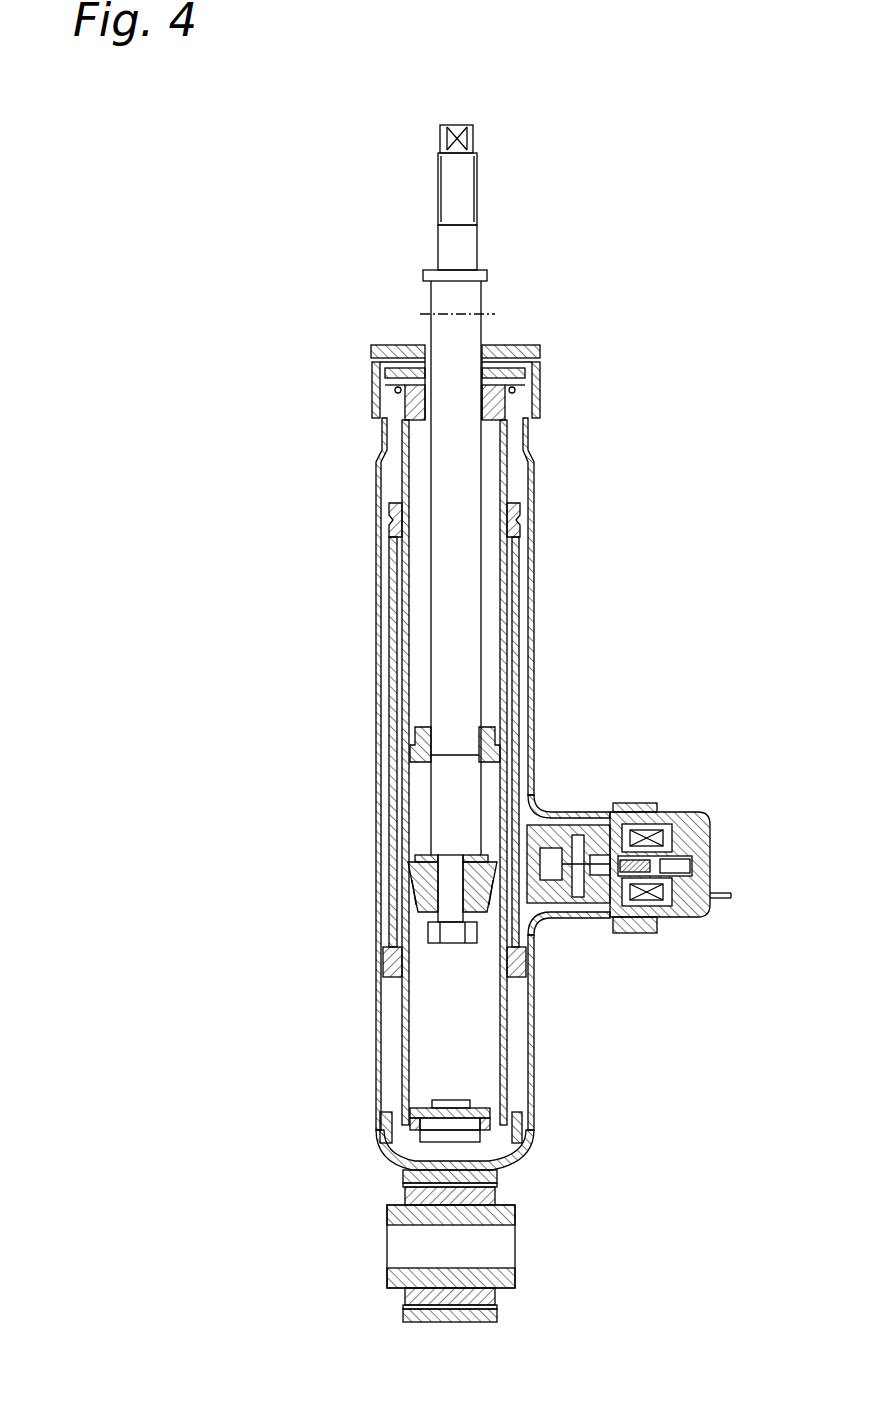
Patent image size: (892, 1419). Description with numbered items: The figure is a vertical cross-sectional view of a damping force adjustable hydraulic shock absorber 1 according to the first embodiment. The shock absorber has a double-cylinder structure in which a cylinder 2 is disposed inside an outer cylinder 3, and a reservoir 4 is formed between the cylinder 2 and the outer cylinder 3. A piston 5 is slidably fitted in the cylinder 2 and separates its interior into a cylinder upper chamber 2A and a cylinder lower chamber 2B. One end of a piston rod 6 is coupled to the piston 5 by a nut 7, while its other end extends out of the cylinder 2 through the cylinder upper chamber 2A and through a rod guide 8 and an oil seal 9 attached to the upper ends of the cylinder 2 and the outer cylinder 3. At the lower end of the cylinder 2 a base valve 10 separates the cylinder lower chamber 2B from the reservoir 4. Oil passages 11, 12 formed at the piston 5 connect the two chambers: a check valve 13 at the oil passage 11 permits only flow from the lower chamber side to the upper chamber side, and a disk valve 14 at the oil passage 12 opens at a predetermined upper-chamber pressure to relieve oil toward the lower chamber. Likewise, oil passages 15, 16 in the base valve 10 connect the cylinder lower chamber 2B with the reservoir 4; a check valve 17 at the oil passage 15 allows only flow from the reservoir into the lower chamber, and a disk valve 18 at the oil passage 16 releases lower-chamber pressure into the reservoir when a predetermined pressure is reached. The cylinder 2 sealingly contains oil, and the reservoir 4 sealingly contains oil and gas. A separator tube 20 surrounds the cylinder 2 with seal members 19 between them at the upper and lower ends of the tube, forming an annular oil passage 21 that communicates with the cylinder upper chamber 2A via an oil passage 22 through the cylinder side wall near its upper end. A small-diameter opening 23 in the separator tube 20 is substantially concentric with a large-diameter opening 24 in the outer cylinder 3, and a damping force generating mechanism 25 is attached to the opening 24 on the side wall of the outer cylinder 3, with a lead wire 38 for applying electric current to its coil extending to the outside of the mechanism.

The damping force adjustable hydraulic shock absorber 1 is at (633, 255).
The cylinder 2 is at (513, 482).
The cylinder upper chamber 2A is at (420, 616).
The cylinder lower chamber 2B is at (410, 1013).
The outer cylinder 3 is at (535, 517).
The reservoir 4 is at (393, 480).
The piston 5 is at (410, 883).
The piston rod 6 is at (428, 333).
The nut 7 is at (425, 930).
The rod guide 8 is at (512, 408).
The oil seal 9 is at (500, 348).
The base valve 10 is at (385, 1133).
The oil passage 11 is at (415, 892).
The oil passage 12 is at (493, 865).
The check valve 13 is at (432, 860).
The disk valve 14 is at (529, 925).
The oil passage 15 is at (405, 1163).
The oil passage 16 is at (490, 1105).
The check valve 17 is at (385, 1118).
The disk valve 18 is at (518, 1145).
The seal members 19 is at (395, 523).
The separator tube 20 is at (520, 548).
The annular oil passage 21 is at (507, 622).
The oil passage 22 is at (507, 568).
The opening 23 is at (545, 902).
The opening 24 is at (543, 817).
The damping force generating mechanism 25 is at (715, 795).
The lead wire 38 is at (727, 895).